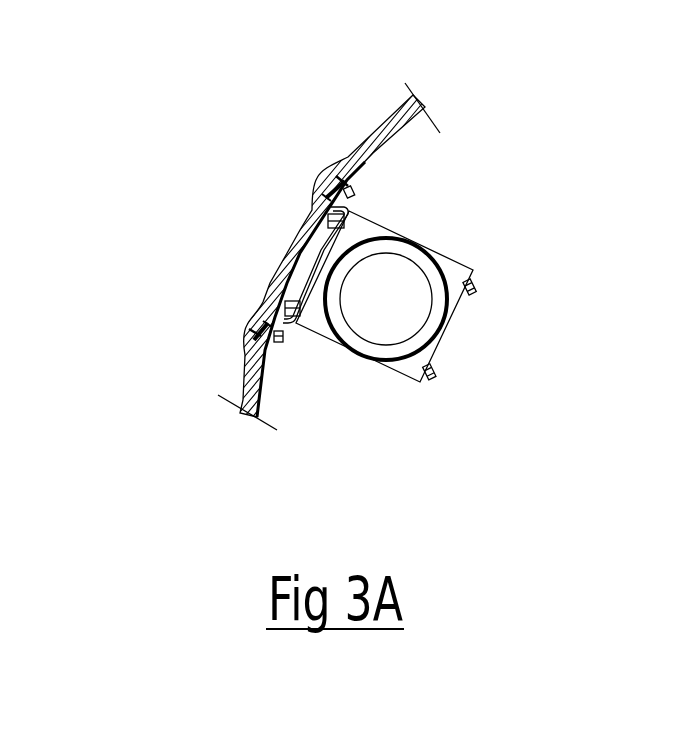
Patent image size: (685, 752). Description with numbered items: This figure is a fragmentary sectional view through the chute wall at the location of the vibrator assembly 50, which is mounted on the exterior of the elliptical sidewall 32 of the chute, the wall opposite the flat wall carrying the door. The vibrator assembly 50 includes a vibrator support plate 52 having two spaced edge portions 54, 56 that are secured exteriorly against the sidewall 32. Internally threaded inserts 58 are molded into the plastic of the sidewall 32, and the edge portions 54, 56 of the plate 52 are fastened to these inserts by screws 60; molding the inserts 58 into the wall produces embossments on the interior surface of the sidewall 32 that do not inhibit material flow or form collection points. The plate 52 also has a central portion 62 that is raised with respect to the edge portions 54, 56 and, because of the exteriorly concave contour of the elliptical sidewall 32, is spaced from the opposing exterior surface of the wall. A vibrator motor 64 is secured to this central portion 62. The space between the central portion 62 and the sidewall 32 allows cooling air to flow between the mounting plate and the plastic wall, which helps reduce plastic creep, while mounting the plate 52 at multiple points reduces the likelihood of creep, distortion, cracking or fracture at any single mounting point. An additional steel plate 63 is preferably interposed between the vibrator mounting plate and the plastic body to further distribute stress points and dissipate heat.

The elliptical sidewall 32 is at (378, 134).
The vibrator assembly 50 is at (591, 161).
The vibrator support plate 52 is at (358, 333).
The edge portion 54 is at (315, 200).
The edge portion 56 is at (351, 421).
The internally threaded insert 58 is at (253, 335).
The screw 60 is at (351, 195).
The central portion 62 is at (320, 264).
The steel plate 63 is at (290, 304).
The vibrator motor 64 is at (457, 278).